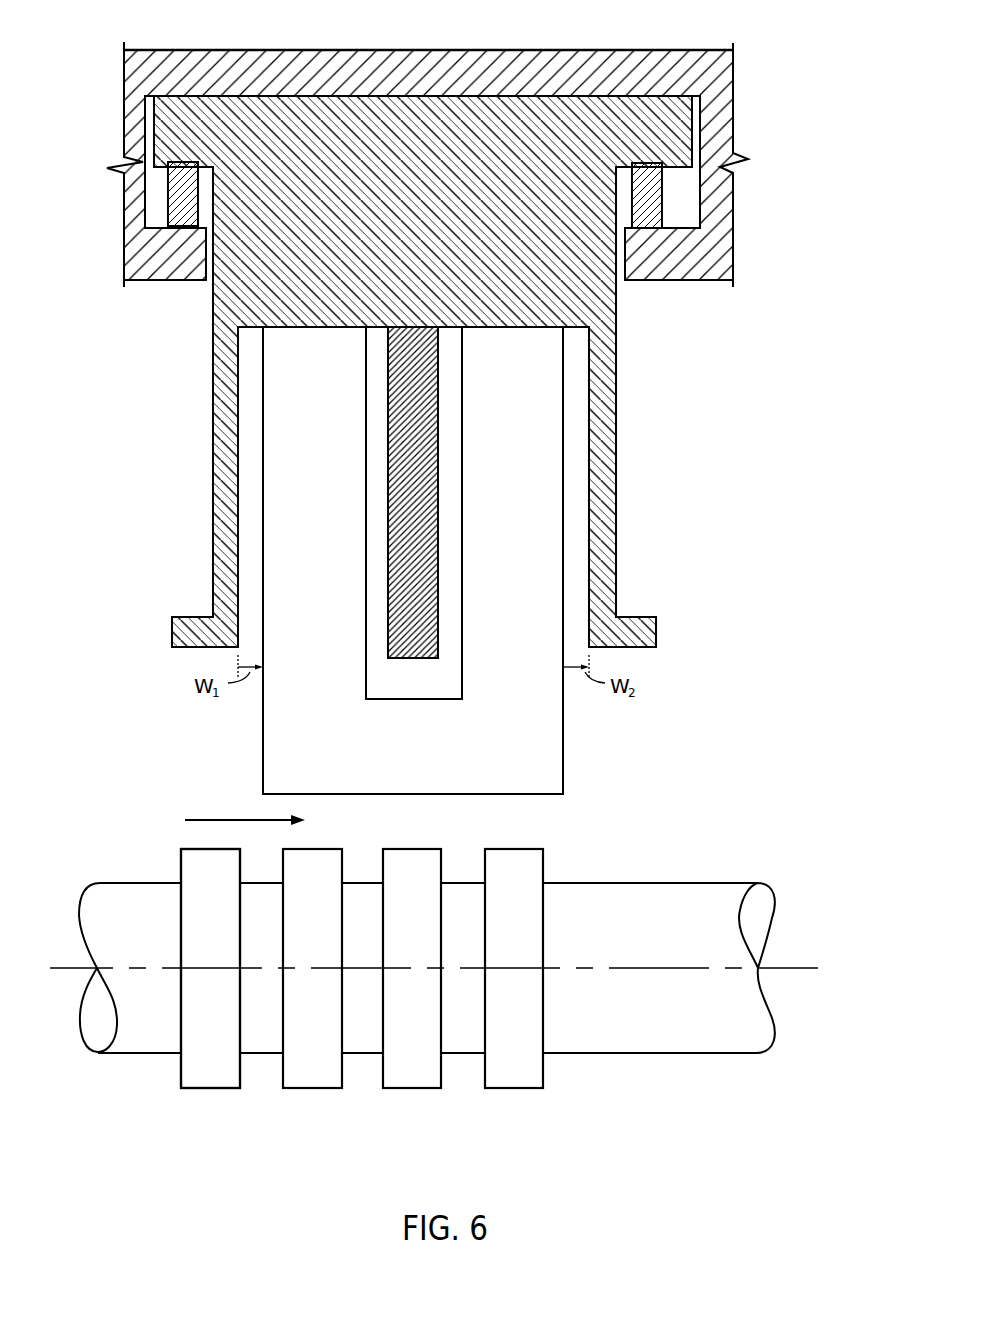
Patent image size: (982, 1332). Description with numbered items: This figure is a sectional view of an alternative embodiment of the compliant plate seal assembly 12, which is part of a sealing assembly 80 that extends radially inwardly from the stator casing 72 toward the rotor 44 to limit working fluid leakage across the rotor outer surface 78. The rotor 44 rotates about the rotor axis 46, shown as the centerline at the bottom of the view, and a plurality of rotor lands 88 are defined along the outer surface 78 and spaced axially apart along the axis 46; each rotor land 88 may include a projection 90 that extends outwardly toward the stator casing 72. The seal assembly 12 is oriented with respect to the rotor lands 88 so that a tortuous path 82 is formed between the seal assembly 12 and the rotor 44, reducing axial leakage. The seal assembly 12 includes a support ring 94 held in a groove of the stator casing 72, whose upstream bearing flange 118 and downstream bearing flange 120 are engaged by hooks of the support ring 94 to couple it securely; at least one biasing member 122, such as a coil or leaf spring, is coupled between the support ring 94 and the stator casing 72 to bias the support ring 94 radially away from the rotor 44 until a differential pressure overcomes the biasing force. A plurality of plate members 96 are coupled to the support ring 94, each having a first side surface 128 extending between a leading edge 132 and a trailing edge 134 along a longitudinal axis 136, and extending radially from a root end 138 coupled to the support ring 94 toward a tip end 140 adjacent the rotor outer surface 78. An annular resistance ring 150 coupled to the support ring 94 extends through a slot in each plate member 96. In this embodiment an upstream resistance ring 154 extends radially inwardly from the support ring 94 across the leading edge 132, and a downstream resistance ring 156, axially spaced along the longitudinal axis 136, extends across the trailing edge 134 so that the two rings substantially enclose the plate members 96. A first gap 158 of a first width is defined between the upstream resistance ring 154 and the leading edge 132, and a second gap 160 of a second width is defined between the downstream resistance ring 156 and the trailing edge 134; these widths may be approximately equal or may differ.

The compliant plate seal assembly 12 is at (677, 396).
The rotor 44 is at (726, 882).
The rotor axis 46 is at (805, 968).
The stator casing 72 is at (703, 49).
The outer surface 78 is at (652, 882).
The sealing assembly 80 is at (797, 129).
The tortuous path 82 is at (190, 818).
The rotor lands 88 is at (210, 1090).
The projection 90 is at (240, 858).
The support ring 94 is at (432, 253).
The plate members 96 is at (543, 427).
The upstream bearing flange 118 is at (241, 126).
The downstream bearing flange 120 is at (622, 128).
The biasing member 122 is at (652, 195).
The first side surface 128 is at (265, 776).
The leading edge 132 is at (253, 720).
The trailing edge 134 is at (574, 591).
The longitudinal axis 136 is at (60, 965).
The root end 138 is at (540, 358).
The tip end 140 is at (548, 790).
The annular resistance ring 150 is at (440, 518).
The upstream resistance ring 154 is at (213, 595).
The downstream resistance ring 156 is at (608, 593).
The first gap 158 is at (244, 543).
The second gap 160 is at (584, 542).